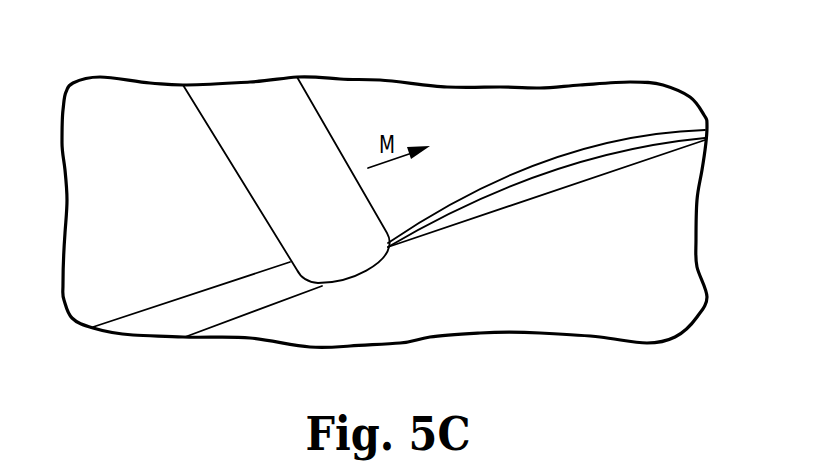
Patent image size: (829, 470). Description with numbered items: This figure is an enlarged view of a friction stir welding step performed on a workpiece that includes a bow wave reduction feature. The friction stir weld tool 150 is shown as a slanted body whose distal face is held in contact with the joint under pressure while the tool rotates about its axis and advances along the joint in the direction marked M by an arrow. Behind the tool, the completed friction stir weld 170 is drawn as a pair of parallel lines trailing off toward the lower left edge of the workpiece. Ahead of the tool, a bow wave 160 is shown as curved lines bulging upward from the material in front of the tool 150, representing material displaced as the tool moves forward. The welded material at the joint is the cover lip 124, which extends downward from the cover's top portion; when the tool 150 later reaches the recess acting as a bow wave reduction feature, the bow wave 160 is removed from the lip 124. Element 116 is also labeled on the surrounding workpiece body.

The substrate 116 is at (567, 297).
The cover lip 124 is at (468, 128).
The friction stir weld tool 150 is at (310, 137).
The bow wave 160 is at (567, 160).
The friction stir weld 170 is at (200, 310).